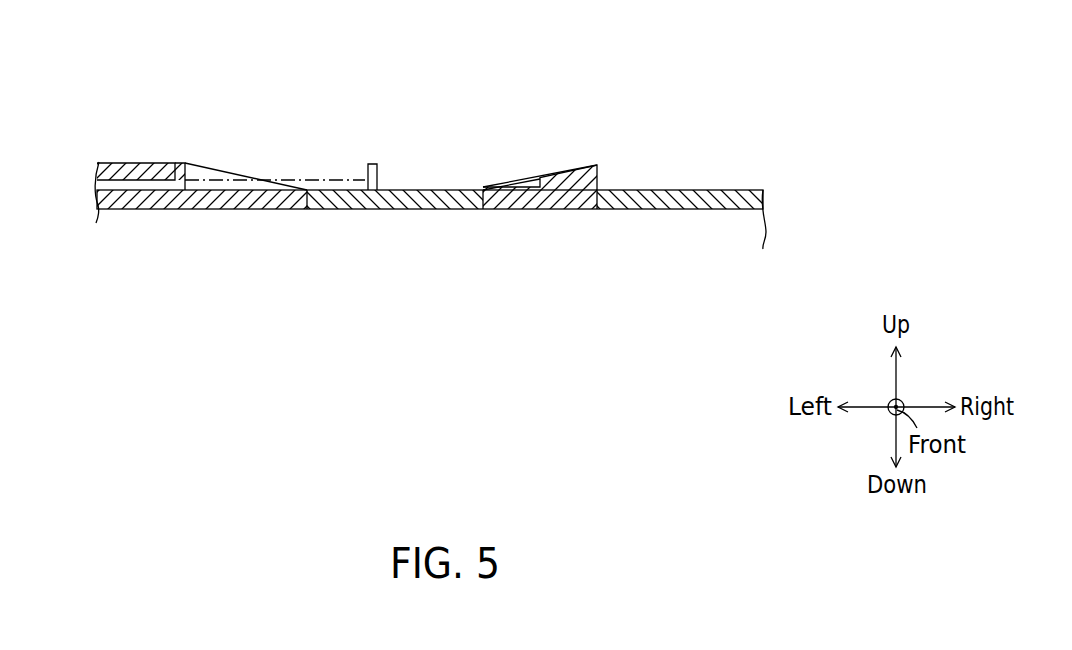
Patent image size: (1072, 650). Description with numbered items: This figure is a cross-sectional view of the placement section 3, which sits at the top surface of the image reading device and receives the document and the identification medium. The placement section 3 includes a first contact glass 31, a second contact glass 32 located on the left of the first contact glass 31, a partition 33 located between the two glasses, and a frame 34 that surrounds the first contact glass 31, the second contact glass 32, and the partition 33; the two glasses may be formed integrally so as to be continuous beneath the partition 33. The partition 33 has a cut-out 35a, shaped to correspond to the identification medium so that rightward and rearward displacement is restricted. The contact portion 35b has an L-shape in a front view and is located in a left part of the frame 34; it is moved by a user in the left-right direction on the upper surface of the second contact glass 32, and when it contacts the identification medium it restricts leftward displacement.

The placement section 3 is at (431, 135).
The first contact glass 31 is at (693, 197).
The second contact glass 32 is at (427, 197).
The partition 33 is at (570, 178).
The frame 34 is at (132, 170).
The cut-out 35a is at (517, 172).
The contact portion 35b is at (182, 165).